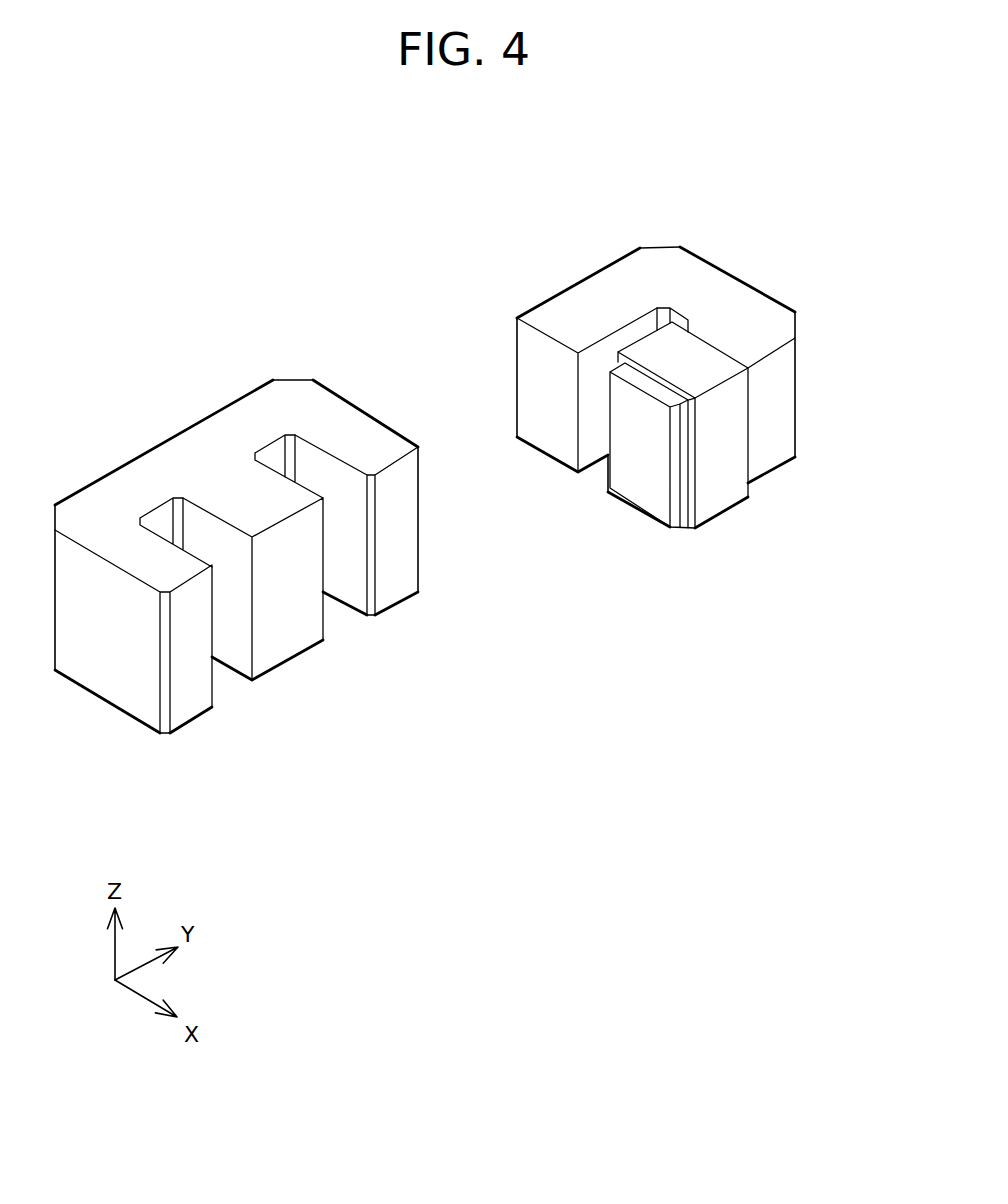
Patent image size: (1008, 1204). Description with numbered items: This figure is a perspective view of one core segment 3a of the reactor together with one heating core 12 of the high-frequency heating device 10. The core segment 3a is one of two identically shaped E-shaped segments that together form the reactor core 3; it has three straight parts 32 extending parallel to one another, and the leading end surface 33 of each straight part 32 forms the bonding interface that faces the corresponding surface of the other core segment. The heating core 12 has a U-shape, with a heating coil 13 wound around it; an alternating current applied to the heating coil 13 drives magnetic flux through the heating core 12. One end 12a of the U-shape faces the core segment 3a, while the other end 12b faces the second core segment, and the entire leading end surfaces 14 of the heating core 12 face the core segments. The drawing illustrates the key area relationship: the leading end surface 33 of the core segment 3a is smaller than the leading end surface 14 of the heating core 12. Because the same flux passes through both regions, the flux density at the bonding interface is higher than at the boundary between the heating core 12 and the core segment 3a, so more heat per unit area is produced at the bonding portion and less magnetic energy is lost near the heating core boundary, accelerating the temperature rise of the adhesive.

The reactor core 3 is at (268, 557).
The core segment 3a is at (174, 457).
The straight part 32 is at (160, 560).
The leading end surface 33 is at (196, 686).
The high-frequency heating device 10 is at (777, 192).
The heating core 12 is at (691, 276).
The one end of the heating core 12a is at (565, 320).
The other end of the heating core 12b is at (652, 383).
The heating coil 13 is at (707, 357).
The leading end surface of the heating core 14 is at (548, 435).